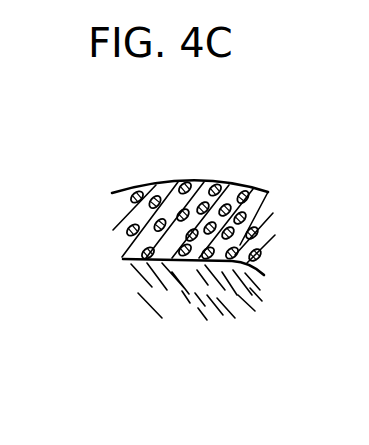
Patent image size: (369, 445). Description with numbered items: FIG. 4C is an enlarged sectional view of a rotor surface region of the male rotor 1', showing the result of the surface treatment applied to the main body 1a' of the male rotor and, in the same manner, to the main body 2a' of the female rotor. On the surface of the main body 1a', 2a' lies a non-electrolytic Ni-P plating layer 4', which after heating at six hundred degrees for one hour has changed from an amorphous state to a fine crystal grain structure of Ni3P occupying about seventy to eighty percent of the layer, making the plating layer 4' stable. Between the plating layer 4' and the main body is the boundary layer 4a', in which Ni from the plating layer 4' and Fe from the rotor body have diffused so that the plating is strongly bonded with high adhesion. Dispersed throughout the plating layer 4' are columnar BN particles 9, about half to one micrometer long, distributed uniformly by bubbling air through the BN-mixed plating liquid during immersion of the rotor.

The male rotor 1' is at (15, 94).
The non-electrolytic Ni-P plating layer 4' is at (163, 200).
The BN particles 9 is at (182, 184).
The boundary layer 4a' is at (193, 314).
The main body of male rotor 1a' is at (108, 287).
The main body of female rotor 2a' is at (163, 288).